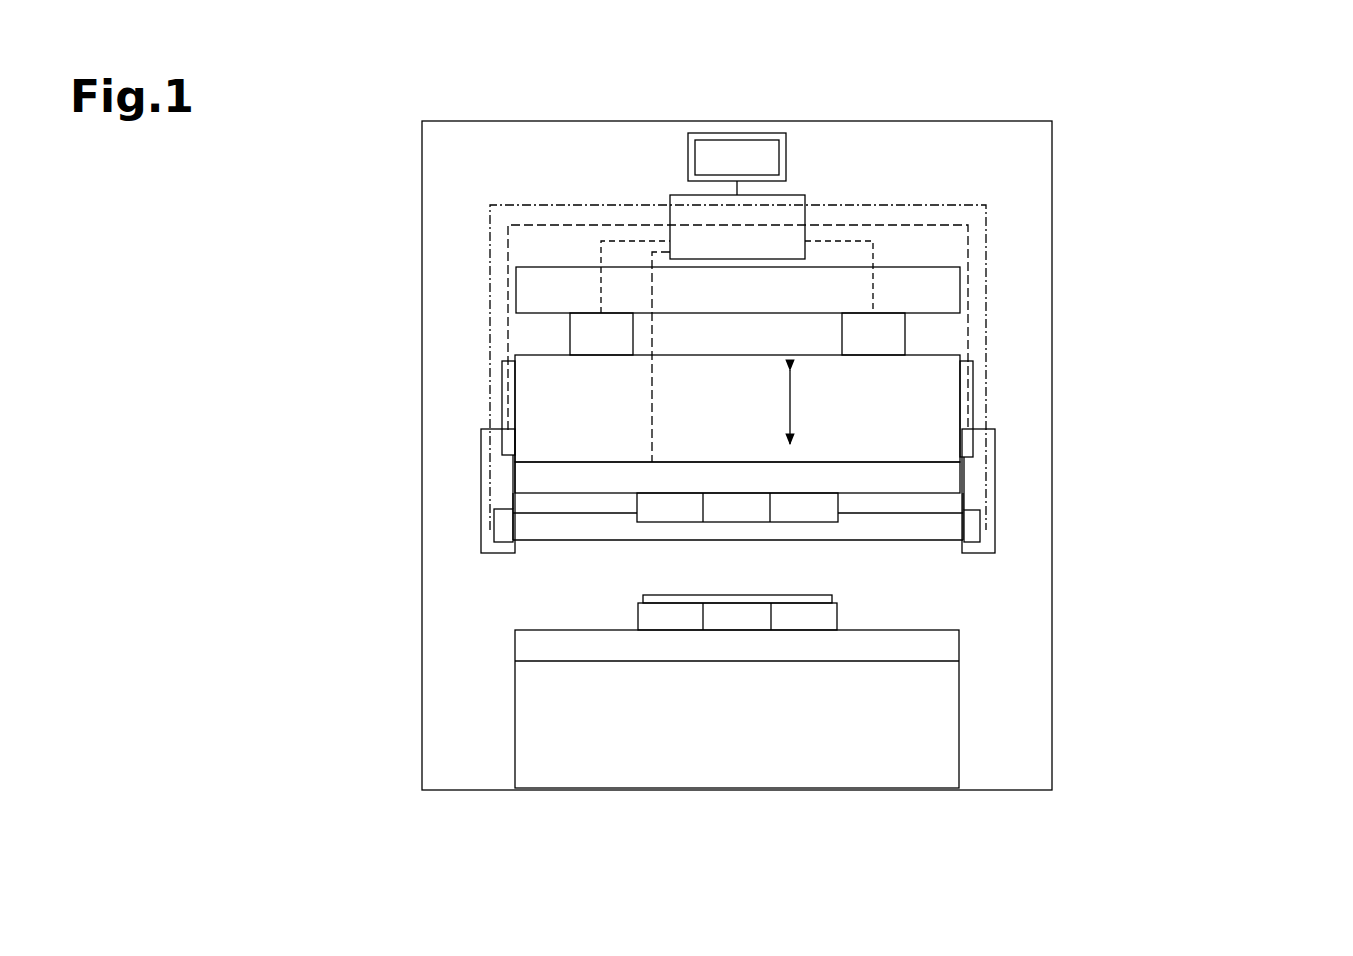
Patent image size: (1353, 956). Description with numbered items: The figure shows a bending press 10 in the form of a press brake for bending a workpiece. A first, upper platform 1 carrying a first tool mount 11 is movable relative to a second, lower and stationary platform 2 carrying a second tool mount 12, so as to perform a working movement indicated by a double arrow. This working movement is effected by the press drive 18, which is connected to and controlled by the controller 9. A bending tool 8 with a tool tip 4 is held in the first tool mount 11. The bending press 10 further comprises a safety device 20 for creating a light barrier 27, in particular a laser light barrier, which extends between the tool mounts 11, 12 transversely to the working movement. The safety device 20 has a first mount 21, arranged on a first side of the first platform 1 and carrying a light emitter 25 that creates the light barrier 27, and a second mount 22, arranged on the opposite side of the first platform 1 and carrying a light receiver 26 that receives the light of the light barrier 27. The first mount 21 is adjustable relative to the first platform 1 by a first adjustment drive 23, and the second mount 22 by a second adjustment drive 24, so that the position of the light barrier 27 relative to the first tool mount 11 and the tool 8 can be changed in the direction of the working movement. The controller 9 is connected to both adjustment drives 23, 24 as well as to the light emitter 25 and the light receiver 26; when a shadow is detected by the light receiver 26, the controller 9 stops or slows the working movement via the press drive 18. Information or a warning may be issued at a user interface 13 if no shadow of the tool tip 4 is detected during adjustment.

The first platform 1 is at (746, 428).
The second platform 2 is at (746, 746).
The tool tip 4 is at (722, 524).
The bending tool 8 is at (838, 508).
The controller 9 is at (746, 238).
The bending press 10 is at (1224, 154).
The first tool mount 11 is at (551, 497).
The second tool mount 12 is at (557, 628).
The user interface 13 is at (786, 143).
The press drive 18 is at (842, 334).
The safety device 20 is at (713, 522).
The first mount 21 is at (482, 462).
The second mount 22 is at (995, 492).
The first adjustment drive 23 is at (502, 395).
The second adjustment drive 24 is at (984, 413).
The light emitter 25 is at (490, 526).
The light receiver 26 is at (993, 530).
The light barrier 27 is at (598, 541).